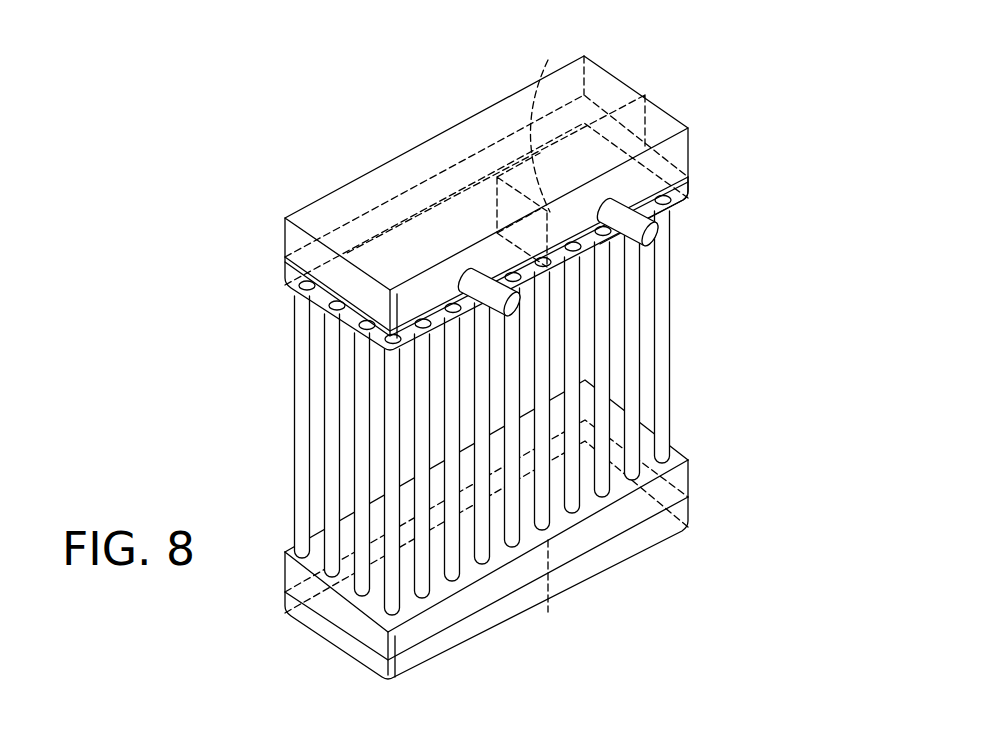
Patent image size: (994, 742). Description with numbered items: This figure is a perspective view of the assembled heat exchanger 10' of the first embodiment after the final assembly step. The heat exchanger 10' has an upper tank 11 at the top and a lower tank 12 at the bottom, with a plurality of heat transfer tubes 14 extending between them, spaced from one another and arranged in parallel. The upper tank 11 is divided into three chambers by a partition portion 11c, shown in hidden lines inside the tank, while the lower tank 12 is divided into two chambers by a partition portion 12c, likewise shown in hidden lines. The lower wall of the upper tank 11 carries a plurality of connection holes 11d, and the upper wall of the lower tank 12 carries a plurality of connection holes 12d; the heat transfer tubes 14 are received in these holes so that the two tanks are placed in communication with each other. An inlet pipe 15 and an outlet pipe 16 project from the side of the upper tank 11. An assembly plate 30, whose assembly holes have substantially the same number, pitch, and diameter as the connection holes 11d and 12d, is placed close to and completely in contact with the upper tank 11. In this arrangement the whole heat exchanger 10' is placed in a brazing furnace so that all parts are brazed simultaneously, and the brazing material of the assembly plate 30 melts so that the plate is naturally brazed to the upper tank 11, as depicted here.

The heat exchanger 10' is at (436, 368).
The upper tank 11 is at (663, 106).
The partition portion 11c is at (548, 60).
The connection holes 11d is at (690, 189).
The lower tank 12 is at (703, 479).
The partition portion 12c is at (531, 566).
The connection holes 12d is at (664, 460).
The heat transfer tubes 14 is at (683, 300).
The inlet pipe 15 is at (500, 282).
The outlet pipe 16 is at (664, 232).
The assembly plate 30 is at (288, 293).